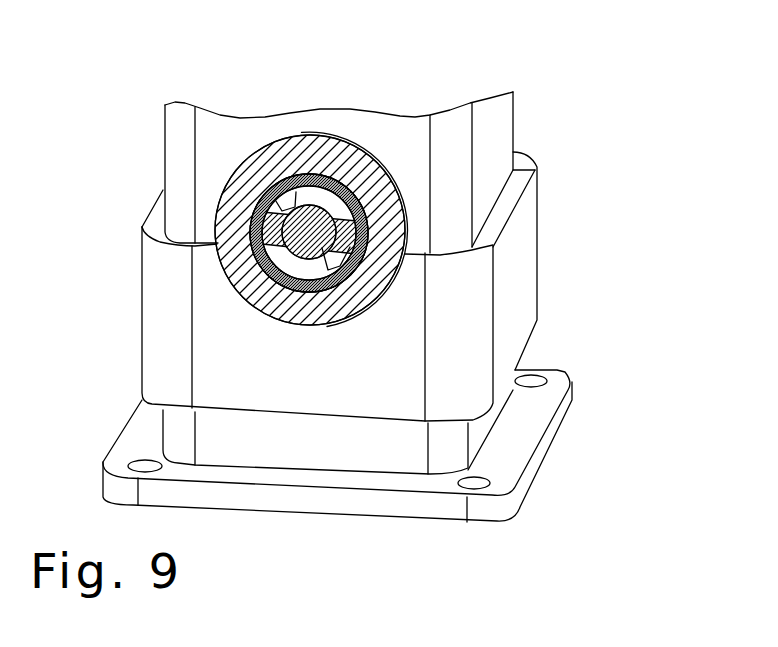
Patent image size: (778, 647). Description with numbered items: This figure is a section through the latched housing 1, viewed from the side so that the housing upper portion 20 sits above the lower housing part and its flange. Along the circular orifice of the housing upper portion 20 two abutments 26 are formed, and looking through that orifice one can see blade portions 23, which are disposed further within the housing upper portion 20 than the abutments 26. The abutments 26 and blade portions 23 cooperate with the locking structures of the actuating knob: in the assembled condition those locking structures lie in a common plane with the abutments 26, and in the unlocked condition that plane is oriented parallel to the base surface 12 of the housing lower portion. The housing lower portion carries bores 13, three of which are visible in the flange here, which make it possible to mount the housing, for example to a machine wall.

The drive unit / assembly 1 is at (566, 118).
The base surface 12 is at (523, 437).
The bores 13 is at (143, 464).
The housing upper portion 20 is at (217, 148).
The blade portions 23 is at (323, 197).
The abutments 26 is at (280, 202).